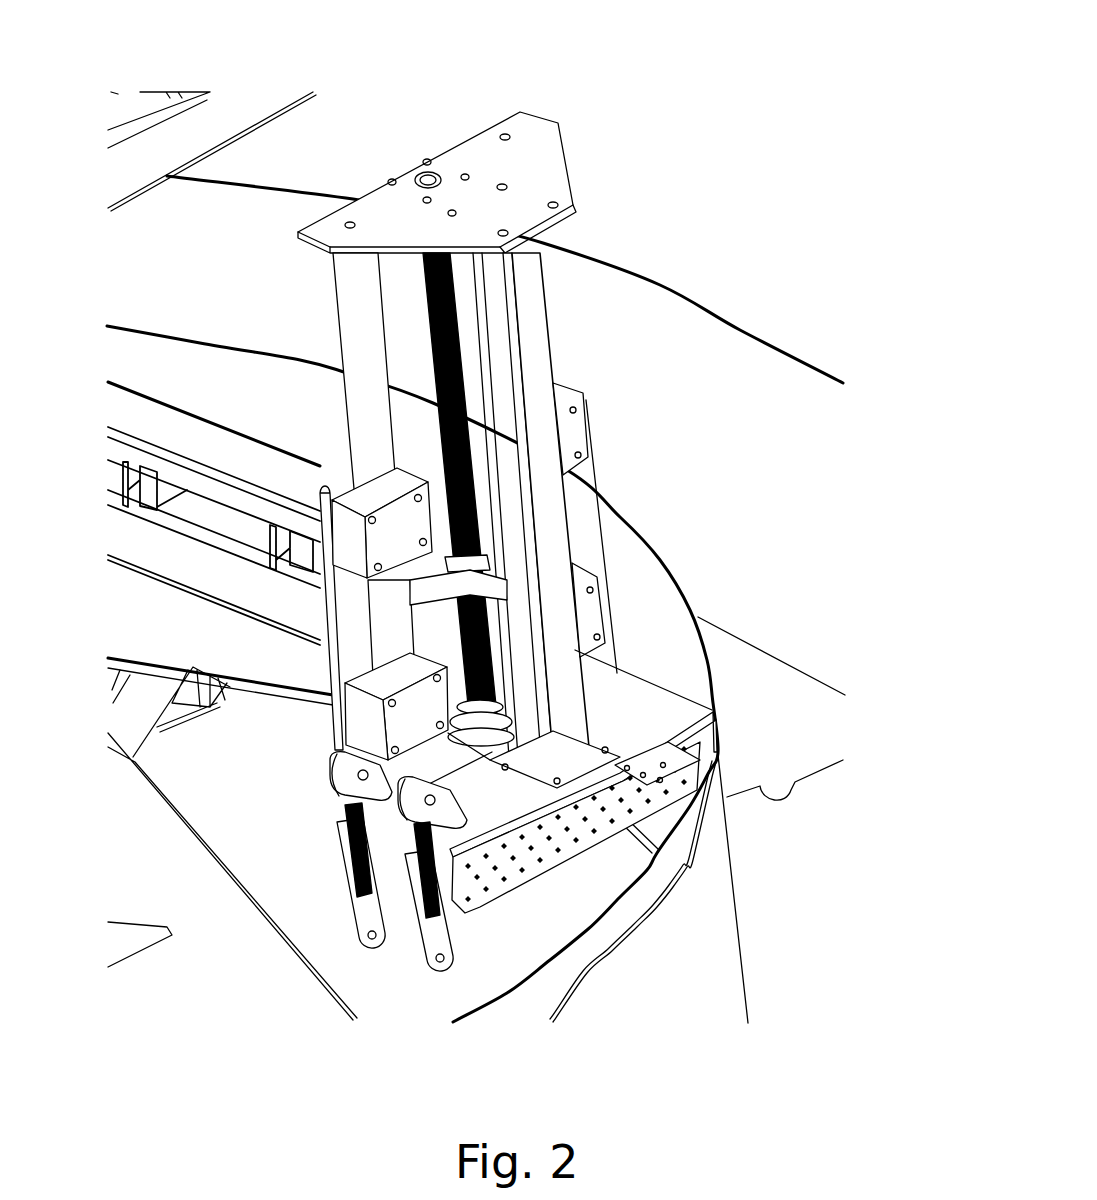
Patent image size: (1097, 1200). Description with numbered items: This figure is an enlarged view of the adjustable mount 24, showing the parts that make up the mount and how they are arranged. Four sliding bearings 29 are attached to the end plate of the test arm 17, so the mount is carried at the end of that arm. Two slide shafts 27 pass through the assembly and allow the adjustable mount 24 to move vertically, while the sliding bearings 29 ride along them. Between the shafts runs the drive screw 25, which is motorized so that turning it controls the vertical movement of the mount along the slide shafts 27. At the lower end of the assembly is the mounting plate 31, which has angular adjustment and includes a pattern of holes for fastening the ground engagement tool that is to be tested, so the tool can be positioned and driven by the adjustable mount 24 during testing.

The test arm 17 is at (181, 437).
The adjustable mount 24 is at (637, 172).
The drive screw 25 is at (472, 388).
The slide shafts 27 is at (365, 418).
The sliding bearings 29 is at (413, 713).
The mounting plate 31 is at (540, 877).